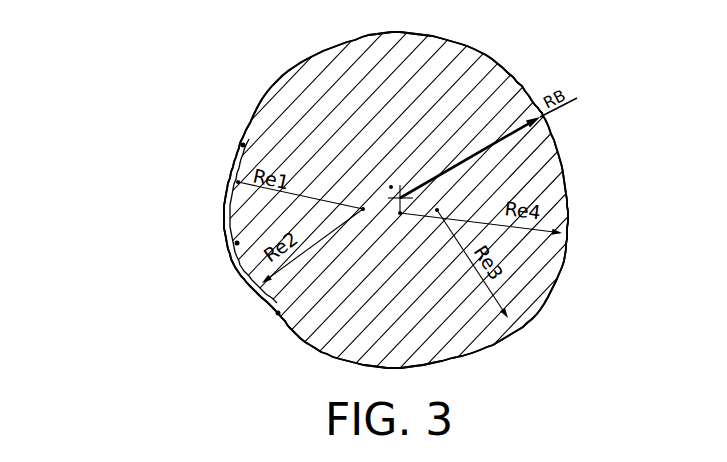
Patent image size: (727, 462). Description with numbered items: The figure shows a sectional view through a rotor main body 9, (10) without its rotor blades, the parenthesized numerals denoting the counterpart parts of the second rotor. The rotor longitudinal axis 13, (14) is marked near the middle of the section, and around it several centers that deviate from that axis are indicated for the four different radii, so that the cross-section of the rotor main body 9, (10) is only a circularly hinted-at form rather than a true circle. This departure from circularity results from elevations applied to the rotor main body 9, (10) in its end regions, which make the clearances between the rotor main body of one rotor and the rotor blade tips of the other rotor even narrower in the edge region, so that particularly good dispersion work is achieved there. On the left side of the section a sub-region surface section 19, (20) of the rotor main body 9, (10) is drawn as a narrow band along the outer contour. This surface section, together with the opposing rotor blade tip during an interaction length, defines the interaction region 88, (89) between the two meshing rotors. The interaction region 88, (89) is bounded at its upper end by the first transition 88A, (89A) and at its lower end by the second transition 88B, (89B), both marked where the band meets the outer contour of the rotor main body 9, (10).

The rotor main body 9 is at (372, 231).
The rotor main body 10 is at (323, 107).
The rotor longitudinal axis 13 is at (430, 196).
The rotor longitudinal axis 14 is at (513, 78).
The sub-region surface section 19 is at (192, 253).
The sub-region surface section 20 is at (237, 243).
The interaction region 88 is at (162, 221).
The interaction region 89 is at (214, 200).
The first transition 88A is at (143, 118).
The first transition 89A is at (243, 145).
The second transition 88B is at (160, 338).
The second transition 89B is at (278, 313).